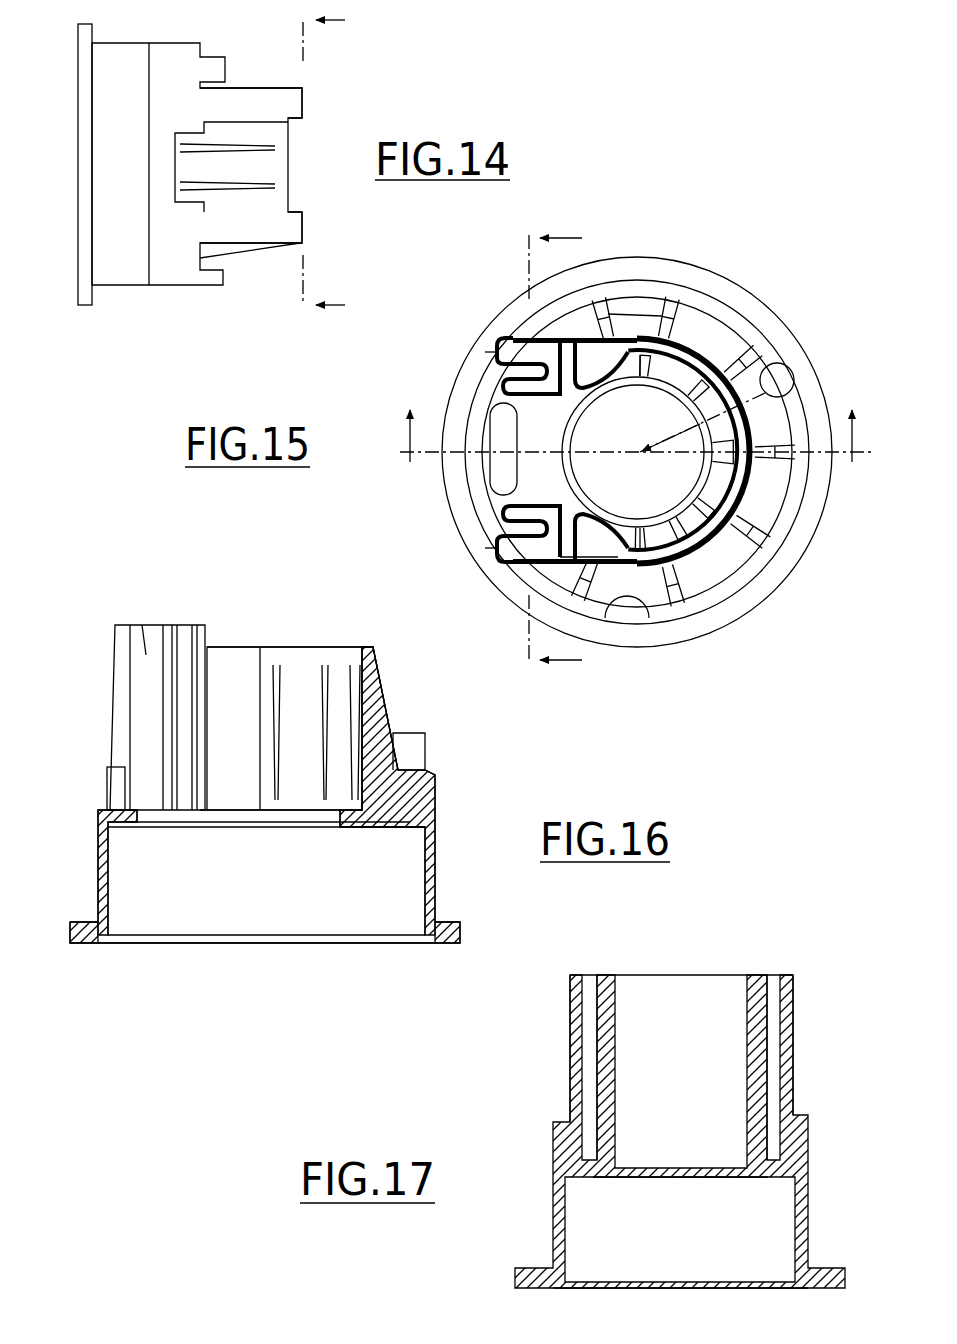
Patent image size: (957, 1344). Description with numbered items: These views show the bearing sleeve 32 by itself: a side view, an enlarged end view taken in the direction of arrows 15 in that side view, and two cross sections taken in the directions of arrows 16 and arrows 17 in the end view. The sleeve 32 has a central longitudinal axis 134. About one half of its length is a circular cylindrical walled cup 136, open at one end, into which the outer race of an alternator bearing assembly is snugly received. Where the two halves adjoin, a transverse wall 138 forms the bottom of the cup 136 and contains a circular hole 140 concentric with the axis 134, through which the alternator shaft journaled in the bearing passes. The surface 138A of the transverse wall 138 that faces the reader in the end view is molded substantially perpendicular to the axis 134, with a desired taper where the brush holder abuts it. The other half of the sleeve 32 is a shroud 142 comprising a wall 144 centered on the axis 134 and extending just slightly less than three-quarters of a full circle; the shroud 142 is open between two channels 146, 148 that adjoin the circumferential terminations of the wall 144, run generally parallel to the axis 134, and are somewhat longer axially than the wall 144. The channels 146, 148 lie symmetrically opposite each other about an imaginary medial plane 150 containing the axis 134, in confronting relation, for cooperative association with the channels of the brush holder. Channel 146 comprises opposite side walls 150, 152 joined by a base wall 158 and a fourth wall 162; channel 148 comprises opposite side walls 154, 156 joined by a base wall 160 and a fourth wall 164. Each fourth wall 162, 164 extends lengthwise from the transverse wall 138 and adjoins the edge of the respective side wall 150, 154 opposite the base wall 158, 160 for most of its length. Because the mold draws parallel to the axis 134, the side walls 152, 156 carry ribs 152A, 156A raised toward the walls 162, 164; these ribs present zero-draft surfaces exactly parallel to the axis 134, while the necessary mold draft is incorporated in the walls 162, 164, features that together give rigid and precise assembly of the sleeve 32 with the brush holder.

In FIG. 14, the section arrows 15— 15 is at (344, 166).
In FIG. 16, the section arrows 16— 16 is at (629, 436).
In FIG. 16, the section arrows 17— 17 is at (574, 455).
In FIG. 14, the bearing sleeve 32 is at (306, 86).
In FIG. 15, the bearing sleeve 32 is at (440, 770).
In FIG. 16, the bearing sleeve 32 is at (802, 555).
In FIG. 17, the bearing sleeve 32 is at (522, 1283).
In FIG. 16, the central longitudinal axis 134 is at (782, 366).
In FIG. 15, the circular cylindrical walled cup 136 is at (257, 917).
In FIG. 17, the circular cylindrical walled cup 136 is at (695, 1262).
In FIG. 15, the transverse wall 138 is at (137, 823).
In FIG. 16, the surface of transverse wall 138A is at (618, 365).
In FIG. 15, the circular hole 140 is at (230, 815).
In FIG. 16, the circular hole 140 is at (690, 490).
In FIG. 15, the shroud 142 is at (372, 705).
In FIG. 16, the shroud 142 is at (722, 597).
In FIG. 15, the wall 144 is at (372, 645).
In FIG. 16, the wall 144 is at (794, 384).
In FIG. 14, the channel 146 is at (305, 104).
In FIG. 15, the channel 146 is at (160, 600).
In FIG. 16, the channel 146 is at (550, 408).
In FIG. 17, the channel 146 is at (784, 958).
In FIG. 14, the channel 148 is at (305, 232).
In FIG. 16, the channel 148 is at (553, 508).
In FIG. 17, the channel 148 is at (592, 962).
In FIG. 16, the imaginary medial plane / side wall 150 is at (510, 366).
In FIG. 16, the side wall 152 is at (592, 340).
In FIG. 16, the rib 152A is at (582, 388).
In FIG. 16, the side wall 154 is at (505, 538).
In FIG. 16, the side wall 156 is at (620, 575).
In FIG. 16, the rib 156A is at (560, 562).
In FIG. 16, the base wall 158 is at (542, 336).
In FIG. 16, the base wall 160 is at (530, 565).
In FIG. 16, the fourth wall 162 is at (500, 396).
In FIG. 16, the fourth wall 164 is at (490, 520).